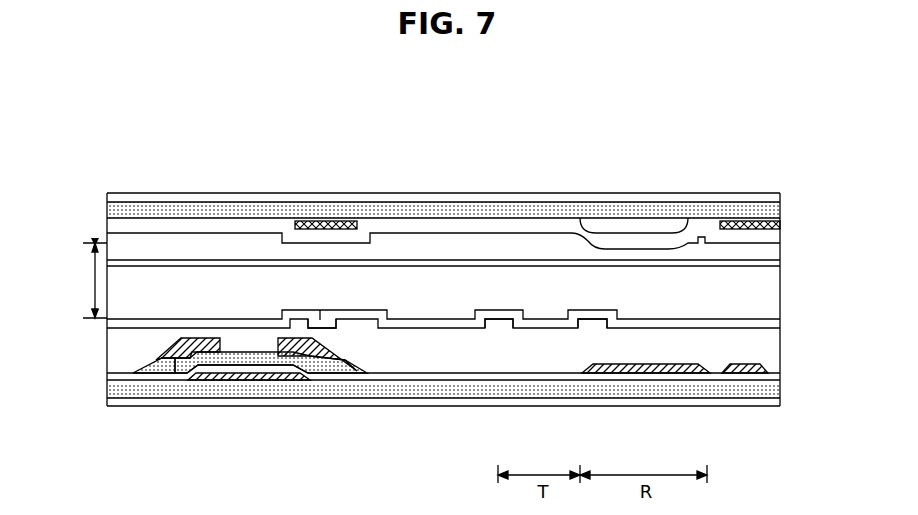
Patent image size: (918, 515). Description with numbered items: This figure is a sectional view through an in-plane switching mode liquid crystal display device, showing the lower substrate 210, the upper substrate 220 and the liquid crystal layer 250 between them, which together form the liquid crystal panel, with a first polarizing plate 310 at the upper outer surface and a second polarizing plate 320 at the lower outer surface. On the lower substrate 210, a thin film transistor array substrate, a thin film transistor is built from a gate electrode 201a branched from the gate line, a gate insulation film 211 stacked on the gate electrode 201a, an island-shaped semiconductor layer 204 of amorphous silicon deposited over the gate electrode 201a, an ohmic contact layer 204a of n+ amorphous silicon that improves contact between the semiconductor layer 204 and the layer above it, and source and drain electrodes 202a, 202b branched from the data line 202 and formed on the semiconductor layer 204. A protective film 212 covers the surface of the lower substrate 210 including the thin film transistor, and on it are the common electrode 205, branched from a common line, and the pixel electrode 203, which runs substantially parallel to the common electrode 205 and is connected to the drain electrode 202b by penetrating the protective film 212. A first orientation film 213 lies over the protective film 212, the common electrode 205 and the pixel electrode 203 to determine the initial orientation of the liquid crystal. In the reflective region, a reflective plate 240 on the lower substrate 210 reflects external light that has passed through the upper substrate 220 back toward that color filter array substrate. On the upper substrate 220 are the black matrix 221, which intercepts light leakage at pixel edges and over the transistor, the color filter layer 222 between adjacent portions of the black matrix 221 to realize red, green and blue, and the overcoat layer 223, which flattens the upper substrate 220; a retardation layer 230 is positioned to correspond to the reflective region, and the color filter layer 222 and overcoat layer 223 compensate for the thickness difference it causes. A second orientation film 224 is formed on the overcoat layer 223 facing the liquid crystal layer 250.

The first polarizing plate 310 is at (107, 194).
The upper substrate 220 is at (222, 208).
The black matrix 221 is at (328, 243).
The color filter layer 222 is at (772, 237).
The overcoat layer 223 is at (772, 252).
The retardation layer 230 is at (623, 233).
The second orientation film 224 is at (776, 262).
The liquid crystal layer 250 is at (772, 295).
The first orientation film 213 is at (776, 322).
The protective film 212 is at (772, 352).
The gate insulation film 211 is at (388, 373).
The lower substrate 210 is at (545, 397).
The second polarizing plate 320 is at (117, 400).
The gate electrode 201a is at (273, 378).
The source electrode 202a is at (157, 352).
The drain electrode 202b is at (333, 363).
The pixel electrode 203 is at (365, 323).
The semiconductor layer 204 is at (247, 360).
The ohmic contact layer 204a is at (165, 362).
The common electrode 205 is at (498, 325).
The reflective plate 240 is at (657, 370).
The data line 202 is at (745, 370).